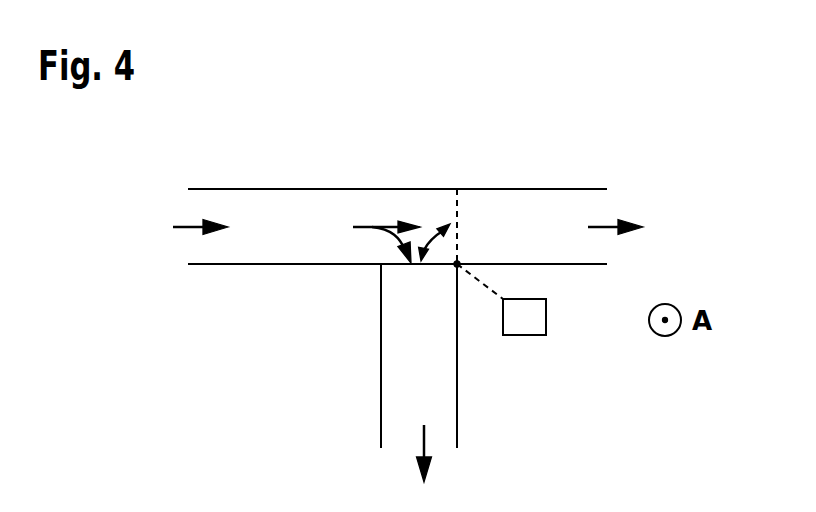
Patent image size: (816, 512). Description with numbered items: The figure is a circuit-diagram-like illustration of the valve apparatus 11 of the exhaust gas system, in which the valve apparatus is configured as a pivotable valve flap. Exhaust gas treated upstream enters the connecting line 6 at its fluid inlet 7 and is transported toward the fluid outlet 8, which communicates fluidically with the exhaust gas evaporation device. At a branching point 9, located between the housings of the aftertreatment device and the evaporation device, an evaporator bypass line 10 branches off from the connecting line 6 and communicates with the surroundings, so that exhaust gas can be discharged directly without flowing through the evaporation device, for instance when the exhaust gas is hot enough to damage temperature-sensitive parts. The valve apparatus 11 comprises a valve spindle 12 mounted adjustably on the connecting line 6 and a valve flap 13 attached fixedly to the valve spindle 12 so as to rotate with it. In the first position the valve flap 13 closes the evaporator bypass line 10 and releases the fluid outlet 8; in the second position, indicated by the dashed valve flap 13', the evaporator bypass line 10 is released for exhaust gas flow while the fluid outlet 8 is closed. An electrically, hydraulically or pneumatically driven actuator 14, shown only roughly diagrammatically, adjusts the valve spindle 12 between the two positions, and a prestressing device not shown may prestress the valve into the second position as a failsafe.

The connecting line 6 is at (563, 160).
The fluid inlet 7 is at (168, 210).
The fluid outlet 8 is at (620, 205).
The branching point 9 is at (416, 190).
The evaporator bypass line 10 is at (480, 439).
The valve apparatus 11 is at (416, 296).
The valve spindle 12 is at (455, 268).
The valve flap 13 is at (352, 301).
The valve flap in second position 13' is at (489, 188).
The actuator 14 is at (535, 322).